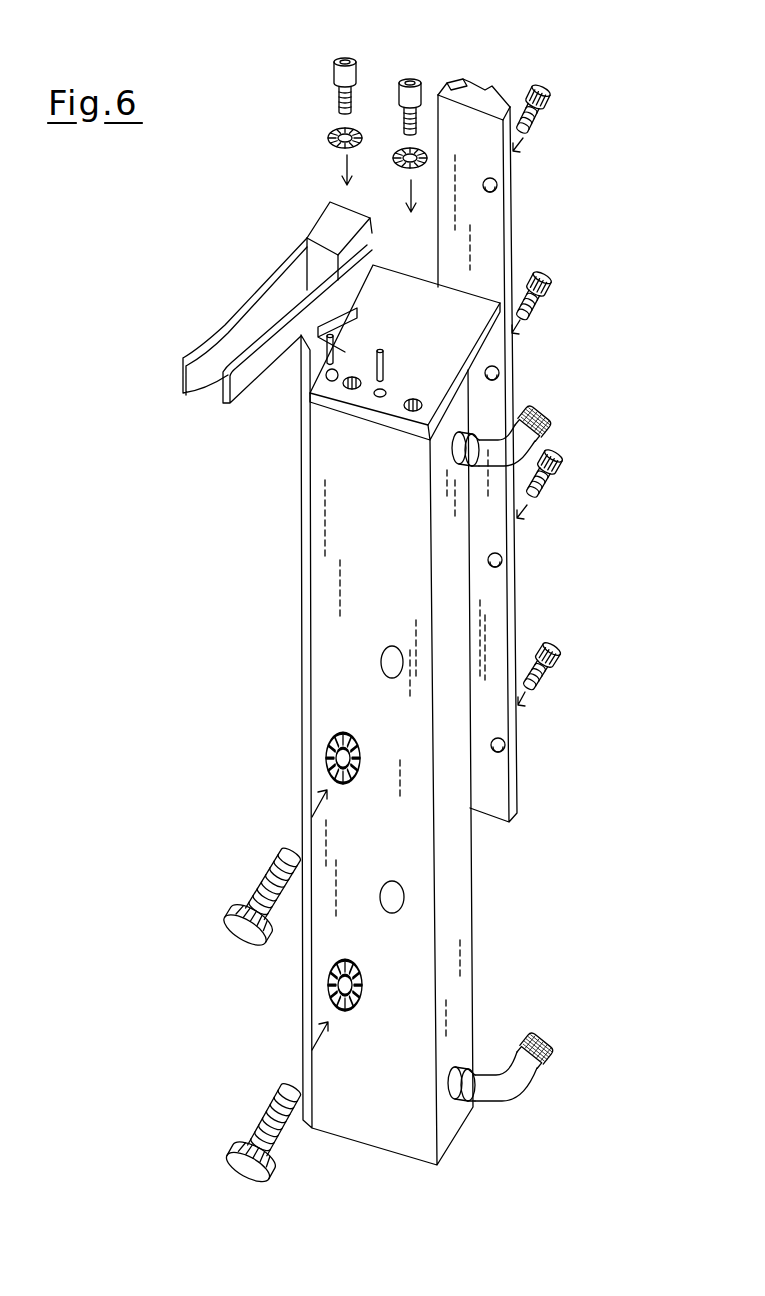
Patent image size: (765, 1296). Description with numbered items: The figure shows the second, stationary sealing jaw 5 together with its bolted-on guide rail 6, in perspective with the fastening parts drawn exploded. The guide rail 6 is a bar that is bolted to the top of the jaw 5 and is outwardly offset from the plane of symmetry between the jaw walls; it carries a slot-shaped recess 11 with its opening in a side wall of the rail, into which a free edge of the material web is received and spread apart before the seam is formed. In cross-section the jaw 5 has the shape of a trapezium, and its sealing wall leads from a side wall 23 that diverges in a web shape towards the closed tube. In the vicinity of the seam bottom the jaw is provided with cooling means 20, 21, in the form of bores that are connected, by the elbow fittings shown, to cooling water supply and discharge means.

The second sealing jaw 5 is at (452, 860).
The guide rail 6 is at (487, 595).
The slot-shaped recess 11 is at (457, 73).
The cooling means 20 is at (545, 421).
The cooling means 21 is at (540, 1047).
The side wall 23 is at (306, 775).